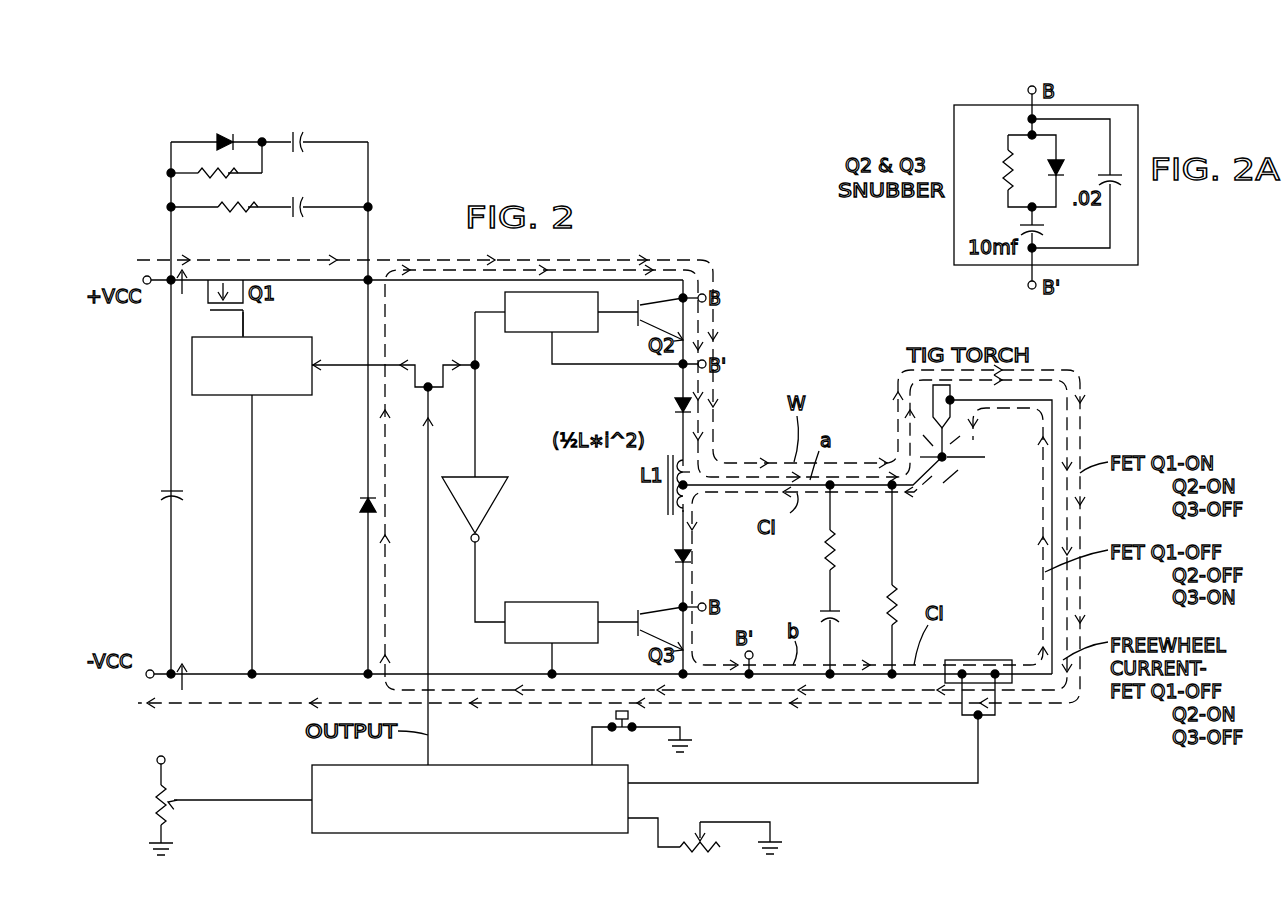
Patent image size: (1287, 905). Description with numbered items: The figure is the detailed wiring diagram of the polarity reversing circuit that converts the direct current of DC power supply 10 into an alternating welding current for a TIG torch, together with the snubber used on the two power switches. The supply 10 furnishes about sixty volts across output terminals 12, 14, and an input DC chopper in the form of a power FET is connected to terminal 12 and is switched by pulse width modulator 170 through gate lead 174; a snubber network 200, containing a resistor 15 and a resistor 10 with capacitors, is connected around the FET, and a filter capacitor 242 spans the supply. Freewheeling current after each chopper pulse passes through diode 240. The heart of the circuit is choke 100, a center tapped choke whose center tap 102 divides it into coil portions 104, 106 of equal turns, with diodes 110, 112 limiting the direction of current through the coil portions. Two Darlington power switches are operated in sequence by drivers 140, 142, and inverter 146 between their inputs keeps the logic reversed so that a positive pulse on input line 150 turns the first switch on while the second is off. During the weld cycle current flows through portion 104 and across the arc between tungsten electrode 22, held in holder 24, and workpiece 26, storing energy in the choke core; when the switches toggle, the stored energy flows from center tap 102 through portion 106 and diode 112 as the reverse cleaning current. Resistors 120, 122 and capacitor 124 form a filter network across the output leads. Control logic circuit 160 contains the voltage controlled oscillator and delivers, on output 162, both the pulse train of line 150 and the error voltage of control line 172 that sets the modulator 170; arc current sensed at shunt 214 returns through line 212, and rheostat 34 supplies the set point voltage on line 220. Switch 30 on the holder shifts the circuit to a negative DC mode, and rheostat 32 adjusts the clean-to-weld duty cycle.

In FIG. 2, the output terminal 12 is at (150, 278).
In FIG. 2, the output terminal 14 is at (158, 672).
In FIG. 2, the snubber resistor 15 is at (216, 184).
In FIG. 2, the DC power supply 10 is at (231, 194).
In FIG. 2A, the DC power supply 10 is at (1018, 171).
In FIG. 2, the snubber network for FET Q1 200 is at (291, 161).
In FIG. 2, the gate lead of FET Q1 174 is at (246, 331).
In FIG. 2, the control line 172 is at (338, 368).
In FIG. 2, the pulse width modulator 170 is at (272, 396).
In FIG. 2, the filter capacitor 242 is at (183, 495).
In FIG. 2, the diode 240 is at (360, 505).
In FIG. 2, the output line 162 is at (430, 608).
In FIG. 2, the input line 150 is at (455, 365).
In FIG. 2, the inverter 146 is at (468, 474).
In FIG. 2, the driver 140 is at (525, 332).
In FIG. 2, the driver 142 is at (535, 602).
In FIG. 2, the diode 110 is at (675, 405).
In FIG. 2, the diode 112 is at (675, 558).
In FIG. 2, the choke 100 is at (690, 466).
In FIG. 2, the coil portion 104 is at (693, 475).
In FIG. 2, the center tap 102 is at (692, 490).
In FIG. 2, the coil portion 106 is at (688, 505).
In FIG. 2, the resistor 120 is at (852, 530).
In FIG. 2, the capacitor 124 is at (840, 616).
In FIG. 2, the resistor 122 is at (893, 584).
In FIG. 2, the holder 24 is at (932, 402).
In FIG. 2, the tungsten electrode 22 is at (944, 434).
In FIG. 2, the workpiece 26 is at (955, 456).
In FIG. 2, the shunt 214 is at (962, 712).
In FIG. 2, the line 212 is at (875, 783).
In FIG. 2, the control logic circuit 160 is at (490, 765).
In FIG. 2, the switch 30 is at (616, 716).
In FIG. 2, the rheostat 32 is at (698, 830).
In FIG. 2, the second rheostat 34 is at (163, 810).
In FIG. 2, the line 220 is at (256, 801).